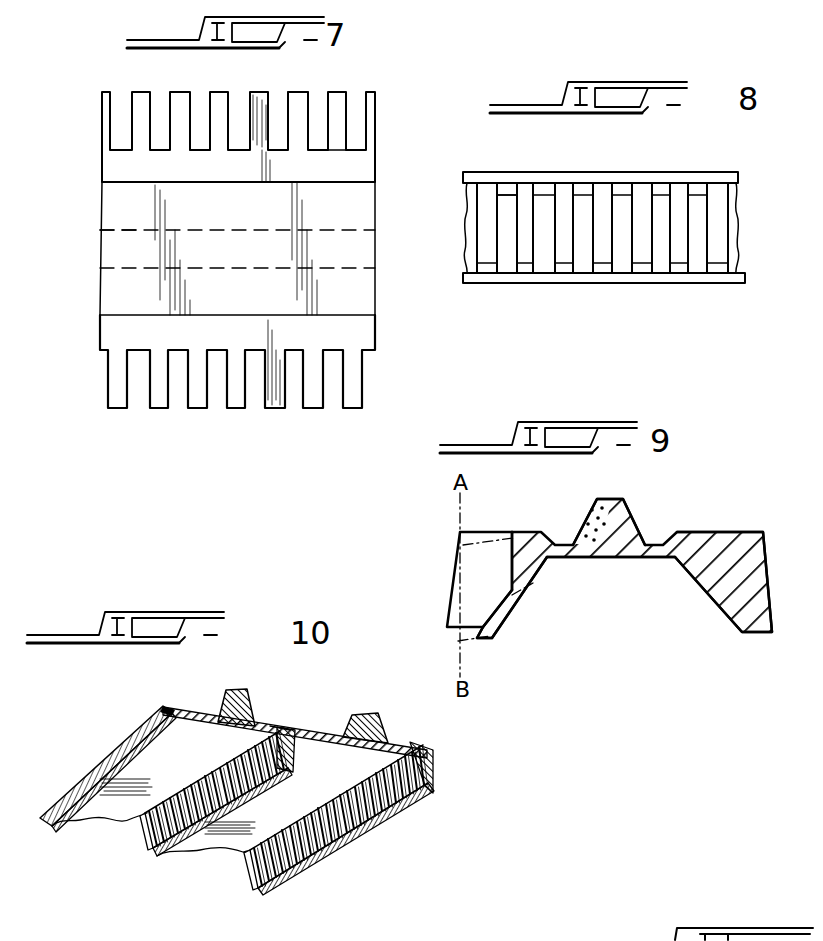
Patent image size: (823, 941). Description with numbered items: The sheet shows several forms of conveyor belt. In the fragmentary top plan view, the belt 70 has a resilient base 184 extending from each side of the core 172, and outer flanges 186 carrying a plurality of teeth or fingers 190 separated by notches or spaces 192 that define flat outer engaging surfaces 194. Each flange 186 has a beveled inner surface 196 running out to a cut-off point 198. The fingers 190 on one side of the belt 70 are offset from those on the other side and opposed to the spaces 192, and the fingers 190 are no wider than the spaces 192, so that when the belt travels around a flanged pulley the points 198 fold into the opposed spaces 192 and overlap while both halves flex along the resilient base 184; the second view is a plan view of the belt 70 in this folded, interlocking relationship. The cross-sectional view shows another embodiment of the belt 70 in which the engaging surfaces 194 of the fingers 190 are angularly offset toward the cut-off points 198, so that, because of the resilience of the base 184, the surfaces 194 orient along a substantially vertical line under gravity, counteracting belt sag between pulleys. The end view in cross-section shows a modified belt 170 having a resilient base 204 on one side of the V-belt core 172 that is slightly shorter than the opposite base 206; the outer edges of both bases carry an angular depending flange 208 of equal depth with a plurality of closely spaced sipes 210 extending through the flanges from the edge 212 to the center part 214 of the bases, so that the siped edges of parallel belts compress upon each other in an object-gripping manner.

In FIG. 7, the belt 70 is at (226, 246).
In FIG. 9, the belt 70 is at (575, 582).
In FIG. 8, the modified belt 170 is at (715, 178).
In FIG. 10, the modified belt 170 is at (268, 772).
In FIG. 7, the core 172 is at (226, 248).
In FIG. 9, the core 172 is at (615, 500).
In FIG. 10, the core 172 is at (240, 690).
In FIG. 7, the resilient base 184 is at (115, 210).
In FIG. 9, the resilient base 184 is at (558, 557).
In FIG. 7, the outer flange 186 is at (265, 115).
In FIG. 9, the outer flange 186 is at (713, 593).
In FIG. 7, the teeth or fingers 190 is at (216, 104).
In FIG. 8, the teeth or fingers 190 is at (481, 213).
In FIG. 9, the teeth or fingers 190 is at (481, 525).
In FIG. 7, the notches or spaces 192 is at (215, 393).
In FIG. 8, the notches or spaces 192 is at (582, 218).
In FIG. 7, the flat outer engaging surface 194 is at (303, 92).
In FIG. 8, the flat outer engaging surface 194 is at (583, 227).
In FIG. 9, the flat outer engaging surface 194 is at (455, 572).
In FIG. 7, the beveled inner surface 196 is at (335, 112).
In FIG. 8, the cut-off point 198 is at (500, 193).
In FIG. 9, the cut-off point 198 is at (478, 641).
In FIG. 10, the resilient base 204 is at (280, 727).
In FIG. 10, the opposite base 206 is at (212, 683).
In FIG. 10, the angular depending flange 208 is at (167, 707).
In FIG. 10, the sipes 210 is at (100, 758).
In FIG. 10, the edge 212 is at (54, 832).
In FIG. 10, the center part 214 is at (150, 736).